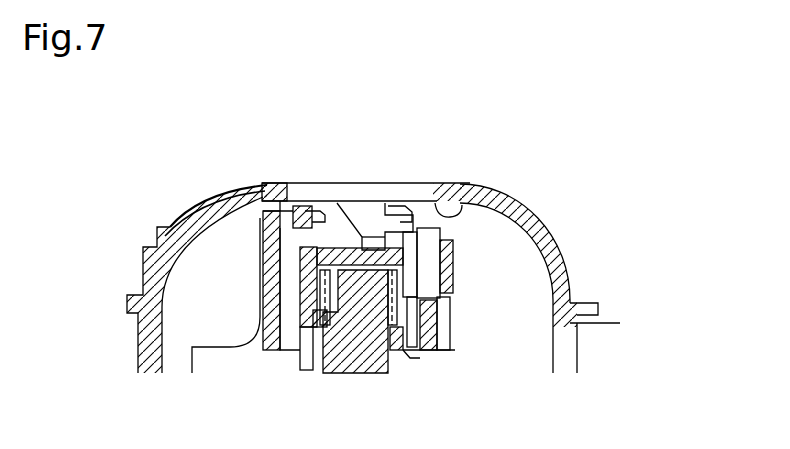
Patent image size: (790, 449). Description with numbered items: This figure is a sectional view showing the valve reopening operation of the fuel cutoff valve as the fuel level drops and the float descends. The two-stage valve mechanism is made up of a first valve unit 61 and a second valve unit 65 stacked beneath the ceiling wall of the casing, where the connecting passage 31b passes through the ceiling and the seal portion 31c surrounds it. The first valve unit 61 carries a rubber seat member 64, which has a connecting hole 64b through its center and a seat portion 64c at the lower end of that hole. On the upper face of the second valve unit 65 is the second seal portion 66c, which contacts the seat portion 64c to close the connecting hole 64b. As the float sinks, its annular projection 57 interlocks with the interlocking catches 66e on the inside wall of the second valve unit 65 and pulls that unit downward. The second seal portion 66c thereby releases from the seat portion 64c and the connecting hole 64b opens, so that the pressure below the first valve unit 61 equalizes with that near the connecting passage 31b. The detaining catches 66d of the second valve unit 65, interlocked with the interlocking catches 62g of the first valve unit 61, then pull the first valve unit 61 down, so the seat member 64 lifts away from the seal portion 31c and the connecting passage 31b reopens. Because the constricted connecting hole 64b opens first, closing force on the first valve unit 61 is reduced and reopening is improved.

The second seal portion 66c is at (305, 220).
The connecting passage 31b is at (310, 190).
The connecting hole 64b is at (355, 223).
The seat portion 64c is at (387, 217).
The seat member 64 is at (405, 205).
The seal portion 31c is at (425, 203).
The second valve unit 65 is at (448, 242).
The detaining catch 66d is at (427, 312).
The first valve unit 61 is at (450, 306).
The interlocking catch 62g is at (433, 332).
The annular projection 57 is at (395, 343).
The interlocking catch 66e is at (410, 350).